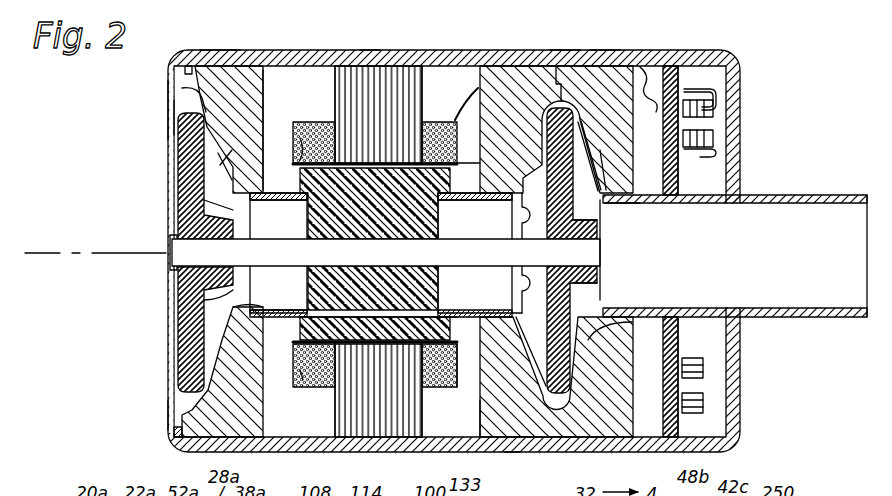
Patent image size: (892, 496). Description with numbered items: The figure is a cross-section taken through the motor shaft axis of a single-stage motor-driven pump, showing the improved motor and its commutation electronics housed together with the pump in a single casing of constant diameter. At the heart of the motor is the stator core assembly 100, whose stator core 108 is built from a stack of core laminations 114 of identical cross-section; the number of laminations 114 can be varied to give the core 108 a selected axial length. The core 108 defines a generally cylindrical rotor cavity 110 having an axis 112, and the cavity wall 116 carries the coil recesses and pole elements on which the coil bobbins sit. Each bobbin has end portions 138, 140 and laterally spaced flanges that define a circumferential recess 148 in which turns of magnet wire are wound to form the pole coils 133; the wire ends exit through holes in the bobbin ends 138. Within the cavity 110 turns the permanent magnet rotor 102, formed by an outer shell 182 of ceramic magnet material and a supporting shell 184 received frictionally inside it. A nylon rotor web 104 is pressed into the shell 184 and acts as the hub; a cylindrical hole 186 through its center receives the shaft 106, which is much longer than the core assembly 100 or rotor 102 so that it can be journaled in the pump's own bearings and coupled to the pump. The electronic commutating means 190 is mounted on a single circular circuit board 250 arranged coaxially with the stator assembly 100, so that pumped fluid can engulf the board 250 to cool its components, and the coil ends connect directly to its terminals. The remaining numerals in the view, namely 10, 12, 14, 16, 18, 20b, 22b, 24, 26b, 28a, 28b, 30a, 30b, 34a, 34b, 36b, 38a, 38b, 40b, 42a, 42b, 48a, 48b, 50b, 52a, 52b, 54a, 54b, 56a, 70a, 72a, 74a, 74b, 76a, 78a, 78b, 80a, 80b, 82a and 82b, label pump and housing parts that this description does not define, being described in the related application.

The pump 10 is at (367, 43).
The housing 12 is at (603, 63).
The end plate 14 is at (168, 80).
The end wall 16 is at (168, 117).
The outlet pipe 18 is at (740, 115).
The housing end wall 20b is at (606, 86).
The motor housing insert 22b is at (498, 77).
The stator end 24 is at (497, 411).
The bearing 26b is at (470, 300).
The housing body 28a is at (220, 77).
The housing body 28b is at (600, 422).
The bearing support 30a is at (278, 255).
The outlet wall 30b is at (716, 202).
The housing wall 34a is at (208, 50).
The housing wall 34b is at (559, 56).
The bearing seat 36b is at (467, 173).
The spacer 38a is at (276, 58).
The spacer plate 38b is at (642, 147).
The seal 40b is at (530, 313).
The support bracket 42a is at (200, 92).
The support bracket 42b is at (593, 337).
The notch 48a is at (186, 66).
The notch 48b is at (513, 452).
The seal lip 50b is at (512, 275).
The cavity 52a is at (188, 308).
The cavity 52b is at (636, 251).
The bearing plate 54a is at (212, 150).
The bearing plate 54b is at (532, 200).
The support 56a is at (198, 203).
The plate 70a is at (178, 357).
The flange 72a is at (225, 330).
The hub 74a is at (228, 276).
The hub 74b is at (597, 247).
The sleeve 76a is at (290, 220).
The shroud 78a is at (231, 163).
The shroud 78b is at (590, 193).
The shaft 80a is at (207, 238).
The shaft 80b is at (592, 269).
The lead wire 82a is at (302, 136).
The lead wire 82b is at (595, 143).
The stator core assembly 100 is at (426, 78).
The permanent magnet rotor 102 is at (451, 183).
The rotor web 104 is at (419, 292).
The shaft 106 is at (598, 255).
The stator core 108 is at (403, 415).
The rotor cavity 110 is at (452, 333).
The axis 112 is at (102, 250).
The core laminations 114 is at (377, 135).
The cavity wall 116 is at (405, 372).
The pole coils 133 is at (299, 370).
The bobbin end portion 138 is at (305, 118).
The bobbin end portion 140 is at (448, 118).
The circumferential recess 148 is at (463, 373).
The outer shell 182 is at (320, 318).
The supporting shell 184 is at (300, 350).
The cylindrical hole 186 is at (440, 240).
The electronic commutating means 190 is at (707, 164).
The circuit board 250 is at (679, 85).